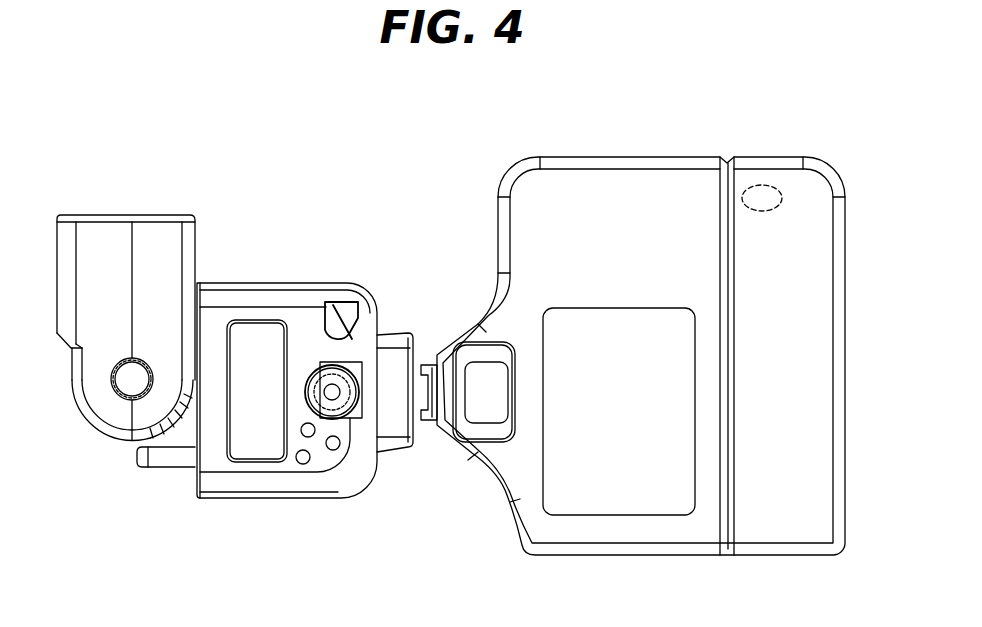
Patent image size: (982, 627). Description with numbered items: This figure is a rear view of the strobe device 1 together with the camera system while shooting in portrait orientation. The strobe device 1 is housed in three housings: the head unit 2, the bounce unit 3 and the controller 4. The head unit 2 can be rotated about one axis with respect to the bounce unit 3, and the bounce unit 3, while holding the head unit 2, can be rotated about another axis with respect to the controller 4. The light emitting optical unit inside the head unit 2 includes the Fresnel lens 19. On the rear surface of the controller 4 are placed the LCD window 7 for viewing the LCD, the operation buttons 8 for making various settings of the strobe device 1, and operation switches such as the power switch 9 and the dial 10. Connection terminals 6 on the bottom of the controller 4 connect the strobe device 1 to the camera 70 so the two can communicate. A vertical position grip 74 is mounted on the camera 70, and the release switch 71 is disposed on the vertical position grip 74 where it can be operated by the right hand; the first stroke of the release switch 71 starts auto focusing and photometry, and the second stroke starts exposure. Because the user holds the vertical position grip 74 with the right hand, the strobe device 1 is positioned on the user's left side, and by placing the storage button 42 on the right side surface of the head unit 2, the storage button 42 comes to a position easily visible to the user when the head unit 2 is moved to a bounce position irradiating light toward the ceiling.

The strobe device 1 is at (304, 189).
The head unit 2 is at (96, 392).
The bounce unit 3 is at (166, 465).
The controller 4 is at (253, 488).
The connection terminals 6 is at (423, 388).
The LCD window 7 is at (258, 333).
The operation buttons 8 is at (318, 448).
The power switch 9 is at (338, 330).
The dial 10 is at (337, 400).
The Fresnel lens 19 is at (138, 215).
The storage button 42 is at (124, 399).
The camera 70 is at (482, 217).
The release switch 71 is at (763, 185).
The vertical position grip 74 is at (777, 533).